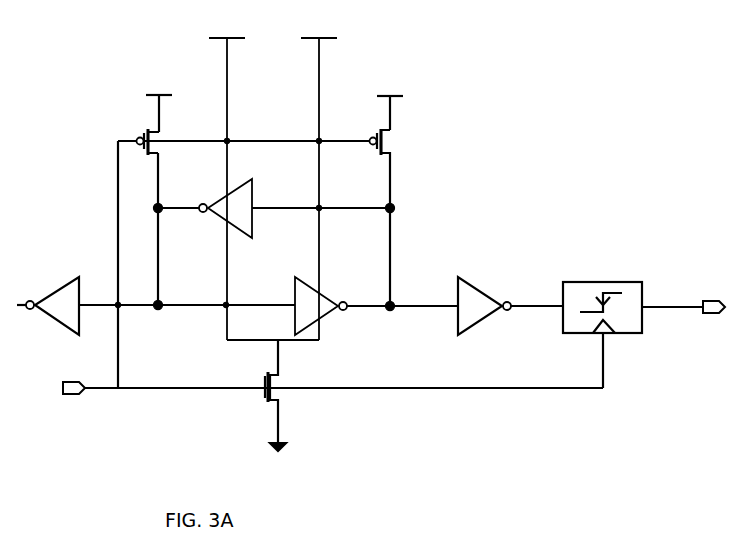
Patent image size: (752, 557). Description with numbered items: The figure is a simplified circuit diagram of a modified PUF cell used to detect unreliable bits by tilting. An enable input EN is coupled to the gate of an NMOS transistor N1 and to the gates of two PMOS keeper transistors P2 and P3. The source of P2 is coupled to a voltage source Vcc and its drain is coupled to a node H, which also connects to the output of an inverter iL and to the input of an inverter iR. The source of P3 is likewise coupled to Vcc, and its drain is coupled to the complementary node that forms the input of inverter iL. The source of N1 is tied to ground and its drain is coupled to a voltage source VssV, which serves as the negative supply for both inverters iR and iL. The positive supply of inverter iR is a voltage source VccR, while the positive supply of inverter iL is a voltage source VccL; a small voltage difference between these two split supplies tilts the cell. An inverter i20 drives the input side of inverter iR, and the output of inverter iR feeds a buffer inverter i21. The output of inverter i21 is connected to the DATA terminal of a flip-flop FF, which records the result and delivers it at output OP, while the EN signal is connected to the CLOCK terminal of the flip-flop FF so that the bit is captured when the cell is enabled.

The PMOS transistor P2 is at (141, 132).
The PMOS transistor P3 is at (391, 168).
The NMOS transistor N1 is at (287, 395).
The inverter i20 is at (48, 291).
The buffer inverter i21 is at (484, 293).
The inverter iL is at (225, 215).
The inverter iR is at (325, 303).
The flip-flop FF is at (602, 290).
The node H is at (166, 208).
The voltage source Vcc is at (274, 101).
The voltage source VccL is at (224, 177).
The voltage source VccR is at (319, 177).
The voltage source VssV is at (300, 349).
The input EN is at (71, 379).
The output OP is at (713, 298).
The data terminal DATA is at (555, 298).
The CLK terminal CLOCK is at (608, 342).